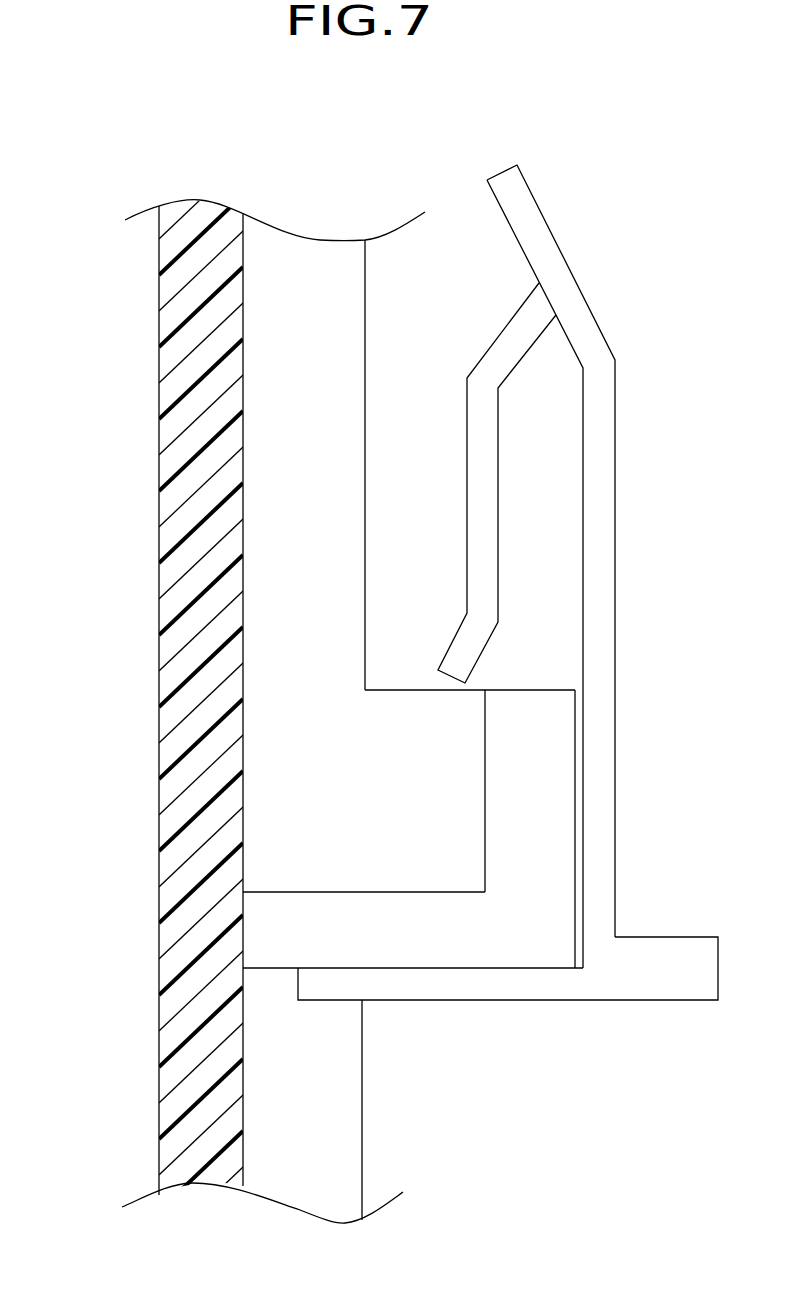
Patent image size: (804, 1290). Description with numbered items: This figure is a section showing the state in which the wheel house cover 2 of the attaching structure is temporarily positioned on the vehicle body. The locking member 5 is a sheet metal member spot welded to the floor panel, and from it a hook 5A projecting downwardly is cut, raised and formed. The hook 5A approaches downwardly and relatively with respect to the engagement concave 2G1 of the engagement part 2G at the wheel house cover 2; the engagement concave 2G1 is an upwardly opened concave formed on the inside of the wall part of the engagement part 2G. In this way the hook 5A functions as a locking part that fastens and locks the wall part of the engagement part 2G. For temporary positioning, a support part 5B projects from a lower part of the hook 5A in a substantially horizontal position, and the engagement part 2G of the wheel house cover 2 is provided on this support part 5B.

The wheel house cover 2 is at (159, 578).
The engagement part 2G is at (555, 947).
The engagement concave 2G1 is at (388, 710).
The locking member 5 is at (646, 598).
The hook 5A is at (478, 472).
The support part 5B is at (435, 1002).